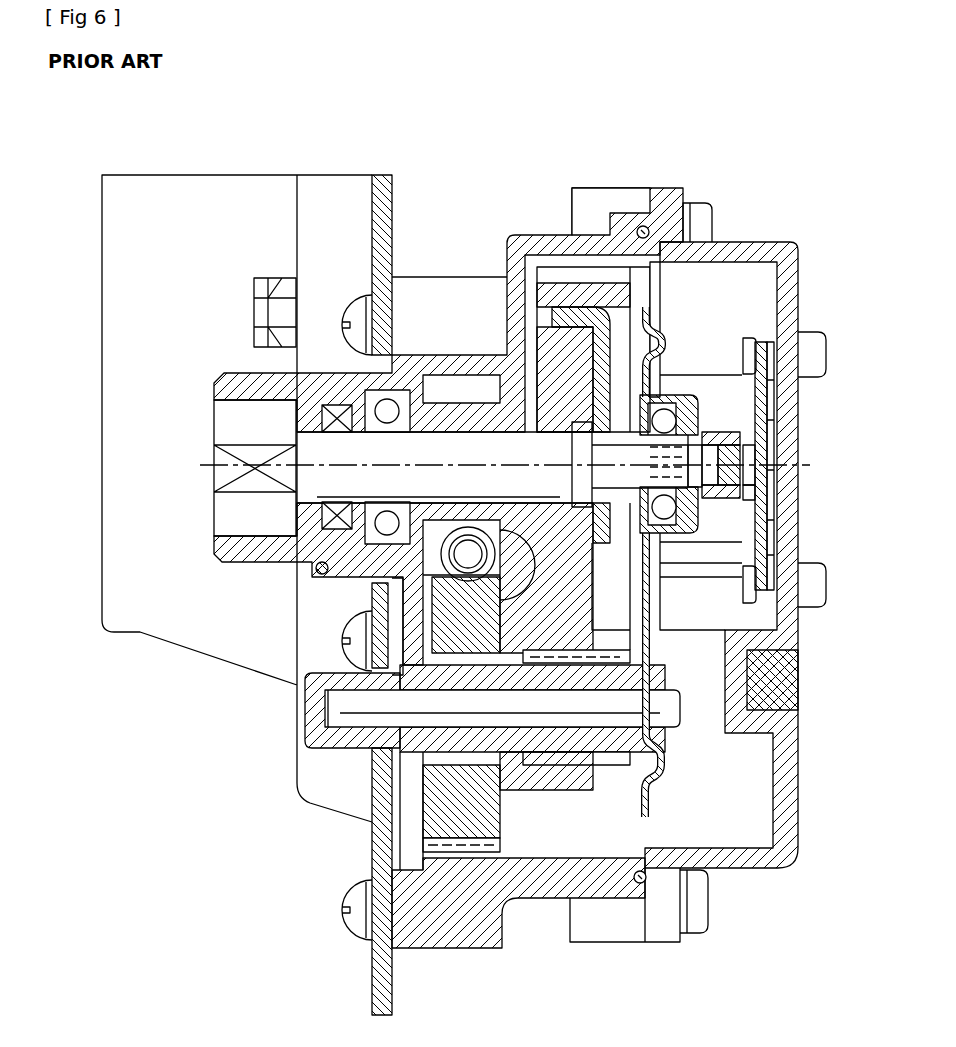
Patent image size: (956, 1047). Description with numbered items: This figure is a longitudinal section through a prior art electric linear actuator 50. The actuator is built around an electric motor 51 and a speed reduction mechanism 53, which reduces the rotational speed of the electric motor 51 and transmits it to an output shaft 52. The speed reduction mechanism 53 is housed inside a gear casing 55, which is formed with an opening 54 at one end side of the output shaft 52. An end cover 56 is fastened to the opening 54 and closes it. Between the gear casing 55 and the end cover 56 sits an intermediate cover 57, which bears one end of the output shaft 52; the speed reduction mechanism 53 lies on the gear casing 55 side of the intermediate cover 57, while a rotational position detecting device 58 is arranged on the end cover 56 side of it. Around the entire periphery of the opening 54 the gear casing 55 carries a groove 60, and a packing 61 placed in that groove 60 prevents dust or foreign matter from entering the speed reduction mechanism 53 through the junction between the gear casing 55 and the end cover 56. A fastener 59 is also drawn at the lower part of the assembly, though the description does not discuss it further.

The electric linear actuator 50 is at (781, 160).
The electric motor 51 is at (505, 548).
The output shaft 52 is at (494, 457).
The speed reduction mechanism 53 is at (540, 943).
The opening 54 is at (633, 855).
The gear casing 55 is at (445, 952).
The end cover 56 is at (742, 242).
The intermediate cover 57 is at (662, 598).
The rotational position detecting device 58 is at (768, 475).
The bolt 59 is at (695, 915).
The groove 60 is at (652, 240).
The packing 61 is at (641, 228).